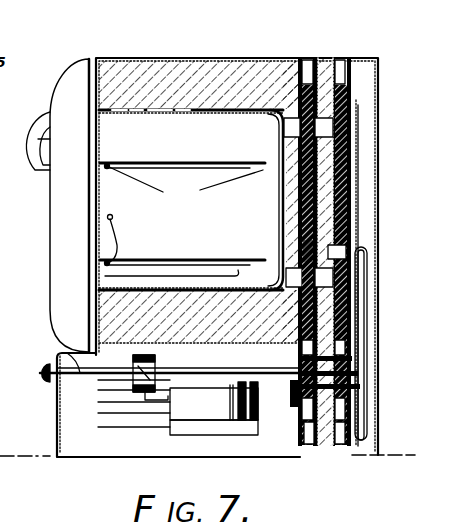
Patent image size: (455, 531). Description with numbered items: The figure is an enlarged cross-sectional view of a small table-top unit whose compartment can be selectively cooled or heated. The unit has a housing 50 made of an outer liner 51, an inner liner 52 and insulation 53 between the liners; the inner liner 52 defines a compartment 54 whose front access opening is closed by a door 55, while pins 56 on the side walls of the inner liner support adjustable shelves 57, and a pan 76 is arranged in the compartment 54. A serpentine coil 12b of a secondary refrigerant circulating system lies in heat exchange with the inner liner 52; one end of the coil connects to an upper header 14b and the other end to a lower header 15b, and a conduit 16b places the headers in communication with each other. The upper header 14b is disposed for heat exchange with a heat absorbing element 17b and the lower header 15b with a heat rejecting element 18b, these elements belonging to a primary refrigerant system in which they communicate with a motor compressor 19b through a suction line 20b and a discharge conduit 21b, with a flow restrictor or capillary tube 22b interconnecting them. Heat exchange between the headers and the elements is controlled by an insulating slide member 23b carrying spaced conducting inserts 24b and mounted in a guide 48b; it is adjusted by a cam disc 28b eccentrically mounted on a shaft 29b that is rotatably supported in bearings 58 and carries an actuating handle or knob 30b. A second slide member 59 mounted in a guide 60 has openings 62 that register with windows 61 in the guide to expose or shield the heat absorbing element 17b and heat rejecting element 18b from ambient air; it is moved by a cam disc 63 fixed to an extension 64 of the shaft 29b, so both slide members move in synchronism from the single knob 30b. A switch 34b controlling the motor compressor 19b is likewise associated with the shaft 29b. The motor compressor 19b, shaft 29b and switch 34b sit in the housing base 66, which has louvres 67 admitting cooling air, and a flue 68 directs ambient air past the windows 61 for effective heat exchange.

The housing 50 is at (129, 49).
The outer liner 51 is at (223, 58).
The insulation 53 is at (180, 58).
The inner liner 52 is at (210, 117).
The compartment 54 is at (129, 201).
The door 55 is at (68, 253).
The pins 56 is at (185, 214).
The adjustable shelves 57 is at (193, 160).
The pan 76 is at (203, 270).
The serpentine coil 12b is at (130, 118).
The upper header 14b is at (292, 134).
The inserts 24b is at (287, 147).
The conduit 16b is at (292, 195).
The lower header 15b is at (293, 270).
The slide member 23b is at (325, 58).
The slide member 59 is at (352, 98).
The heat absorbing element 17b is at (343, 128).
The windows 61 is at (325, 127).
The openings 62 is at (338, 162).
The flue 68 is at (380, 185).
The flow restrictor or capillary tube 22b is at (352, 213).
The heat rejecting element 18b is at (325, 277).
The cam disc 63 is at (382, 350).
The suction line 20b is at (342, 355).
The extension 64 is at (360, 385).
The discharge conduit 21b is at (368, 403).
The guide 60 is at (342, 440).
The guide 48b is at (312, 417).
The bearings 58 is at (57, 407).
The motor compressor 19b is at (200, 440).
The louvres 67 is at (110, 422).
The housing base 66 is at (73, 453).
The actuating handle or knob 30b is at (40, 373).
The switch 34b is at (155, 363).
The cam disc 28b is at (297, 355).
The shaft 29b is at (57, 348).